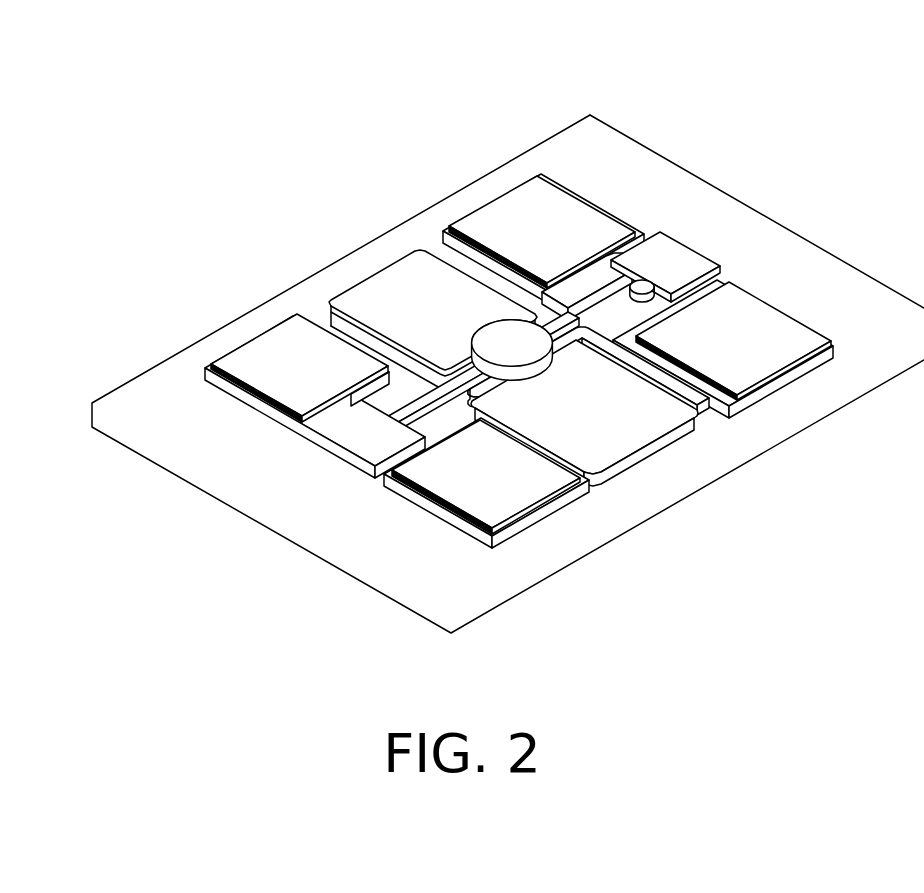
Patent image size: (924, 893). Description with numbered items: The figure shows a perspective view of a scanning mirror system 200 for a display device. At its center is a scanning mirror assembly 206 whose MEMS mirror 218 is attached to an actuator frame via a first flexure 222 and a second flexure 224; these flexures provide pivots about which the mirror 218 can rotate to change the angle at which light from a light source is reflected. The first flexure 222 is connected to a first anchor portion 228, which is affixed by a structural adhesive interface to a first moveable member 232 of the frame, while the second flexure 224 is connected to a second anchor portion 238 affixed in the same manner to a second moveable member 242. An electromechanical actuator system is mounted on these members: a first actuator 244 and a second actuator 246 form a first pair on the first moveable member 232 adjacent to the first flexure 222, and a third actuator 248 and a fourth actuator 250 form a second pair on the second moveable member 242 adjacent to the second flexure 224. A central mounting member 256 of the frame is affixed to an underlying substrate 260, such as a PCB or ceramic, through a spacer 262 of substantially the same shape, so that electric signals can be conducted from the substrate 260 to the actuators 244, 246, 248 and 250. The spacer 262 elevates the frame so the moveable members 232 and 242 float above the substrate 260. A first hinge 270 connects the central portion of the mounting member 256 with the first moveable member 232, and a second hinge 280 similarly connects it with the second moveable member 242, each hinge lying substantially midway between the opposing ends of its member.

The scanning mirror system 200 is at (329, 98).
The scanning mirror assembly 206 is at (567, 280).
The MEMS mirror 218 is at (511, 340).
The first flexure 222 is at (602, 287).
The second flexure 224 is at (432, 394).
The first anchor portion 228 is at (676, 252).
The first moveable member 232 is at (805, 368).
The second anchor portion 238 is at (338, 424).
The second moveable member 242 is at (548, 513).
The first actuator 244 is at (541, 192).
The second actuator 246 is at (766, 352).
The third actuator 248 is at (250, 360).
The fourth actuator 250 is at (410, 485).
The central mounting member 256 is at (376, 292).
The substrate 260 is at (750, 442).
The spacer 262 is at (664, 458).
The first hinge 270 is at (600, 336).
The second hinge 280 is at (480, 401).